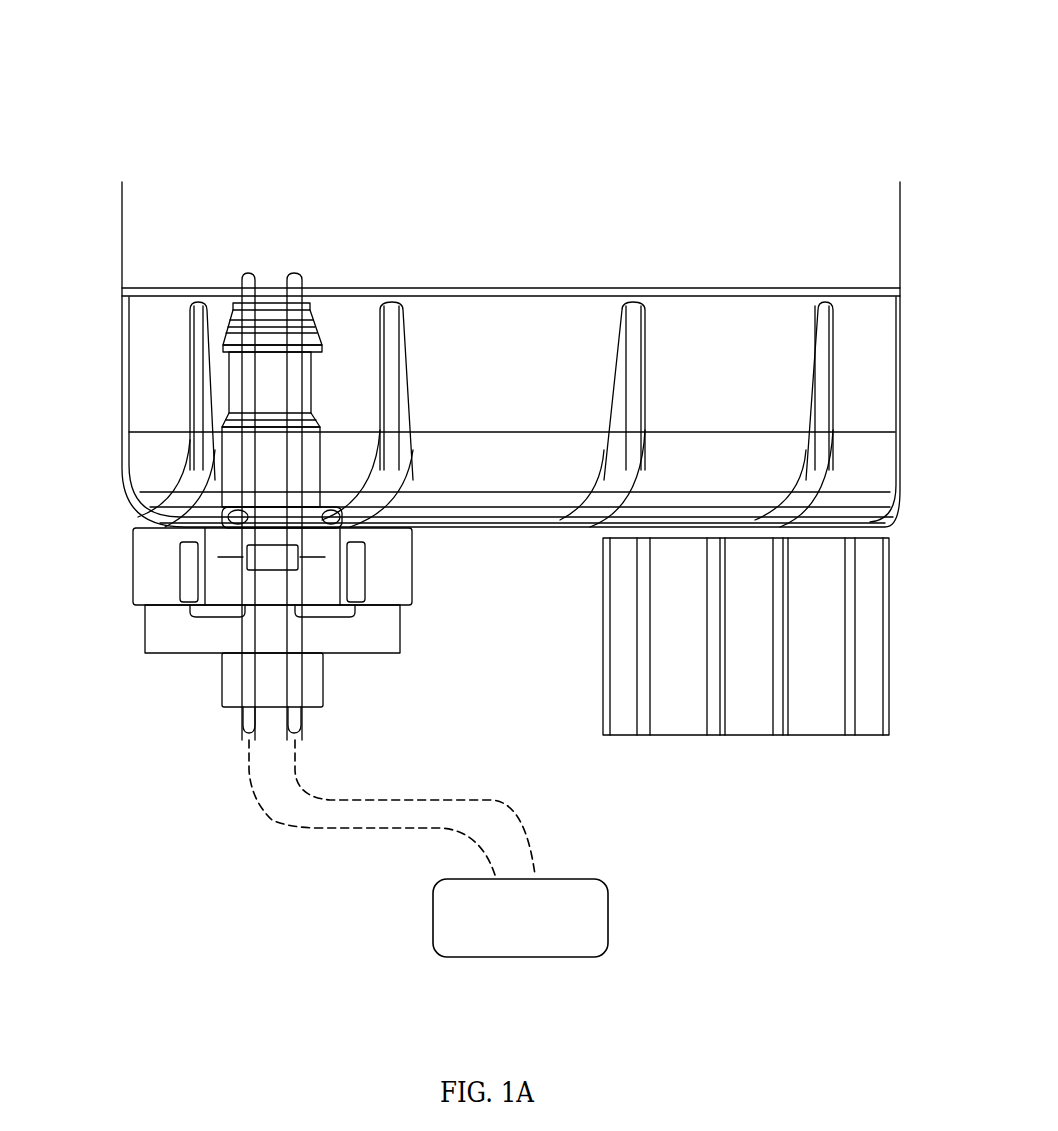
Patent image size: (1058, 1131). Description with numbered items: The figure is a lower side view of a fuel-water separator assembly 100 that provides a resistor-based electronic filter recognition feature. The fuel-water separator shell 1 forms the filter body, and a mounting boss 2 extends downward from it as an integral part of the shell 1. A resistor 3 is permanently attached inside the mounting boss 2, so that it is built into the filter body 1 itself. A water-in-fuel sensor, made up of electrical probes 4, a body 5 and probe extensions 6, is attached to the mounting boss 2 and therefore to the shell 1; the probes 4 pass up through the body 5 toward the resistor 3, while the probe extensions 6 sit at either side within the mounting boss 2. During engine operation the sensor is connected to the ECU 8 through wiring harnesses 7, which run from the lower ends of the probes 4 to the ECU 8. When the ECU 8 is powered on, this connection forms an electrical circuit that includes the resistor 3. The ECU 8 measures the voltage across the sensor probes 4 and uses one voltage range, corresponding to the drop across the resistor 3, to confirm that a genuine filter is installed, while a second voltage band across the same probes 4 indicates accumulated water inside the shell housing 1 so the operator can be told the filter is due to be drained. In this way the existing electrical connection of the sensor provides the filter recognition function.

The fuel-water separator assembly 100 is at (258, 112).
The fuel-water separator shell 1 is at (492, 345).
The mounting boss 2 is at (412, 557).
The resistor 3 is at (274, 556).
The electrical probes 4 is at (248, 272).
The body 5 is at (212, 632).
The probe extensions 6 is at (190, 577).
The wiring harnesses 7 is at (346, 802).
The ECU 8 is at (608, 889).